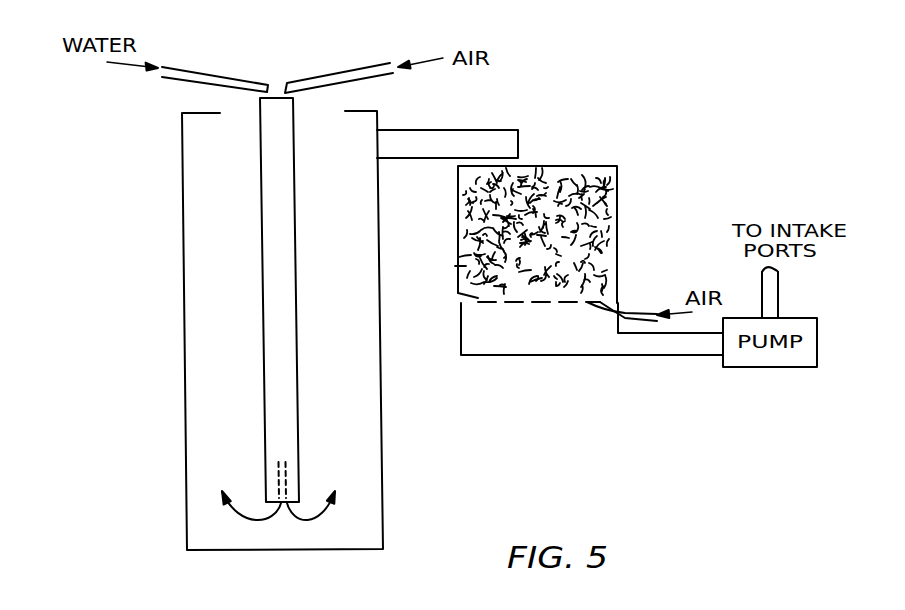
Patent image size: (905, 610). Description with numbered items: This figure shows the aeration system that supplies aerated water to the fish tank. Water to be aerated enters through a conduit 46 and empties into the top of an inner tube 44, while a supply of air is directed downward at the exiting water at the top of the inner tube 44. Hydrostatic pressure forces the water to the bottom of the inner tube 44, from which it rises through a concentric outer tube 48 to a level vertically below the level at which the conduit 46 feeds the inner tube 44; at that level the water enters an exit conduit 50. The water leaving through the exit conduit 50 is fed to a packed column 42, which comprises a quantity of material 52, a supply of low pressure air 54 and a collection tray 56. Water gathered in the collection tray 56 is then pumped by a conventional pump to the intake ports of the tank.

The packed column 42 is at (618, 182).
The inner tube 44 is at (263, 217).
The conduit 46 is at (241, 75).
The concentric outer tube 48 is at (182, 293).
The exit conduit 50 is at (457, 130).
The material 52 is at (597, 240).
The supply of low pressure air 54 is at (631, 307).
The collection tray 56 is at (532, 355).